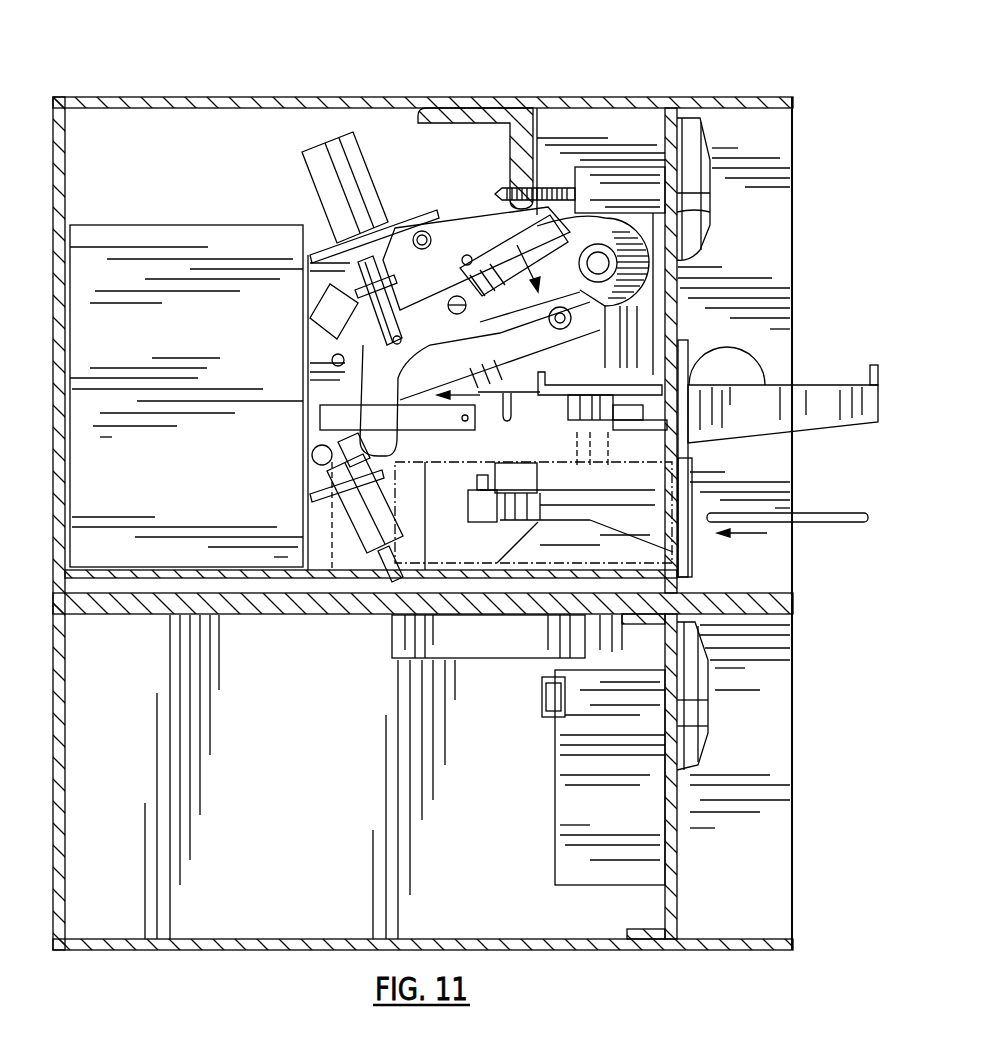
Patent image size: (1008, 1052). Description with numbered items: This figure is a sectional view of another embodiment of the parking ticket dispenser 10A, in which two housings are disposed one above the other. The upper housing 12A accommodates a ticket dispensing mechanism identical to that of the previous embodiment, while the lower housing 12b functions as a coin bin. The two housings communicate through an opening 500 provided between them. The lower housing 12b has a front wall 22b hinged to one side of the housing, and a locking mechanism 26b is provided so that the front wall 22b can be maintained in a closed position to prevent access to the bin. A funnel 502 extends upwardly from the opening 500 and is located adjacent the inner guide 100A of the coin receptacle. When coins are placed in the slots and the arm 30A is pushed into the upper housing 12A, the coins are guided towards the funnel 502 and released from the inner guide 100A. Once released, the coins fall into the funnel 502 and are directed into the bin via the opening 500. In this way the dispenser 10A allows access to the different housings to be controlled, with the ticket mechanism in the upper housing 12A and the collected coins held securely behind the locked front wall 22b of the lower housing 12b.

The parking ticket dispenser 10A is at (423, 499).
The housing 12A is at (284, 104).
The lower housing 12b is at (245, 948).
The front wall 22b is at (678, 897).
The locking mechanism 26b is at (596, 672).
The arm 30A is at (872, 370).
The inner guide 100A is at (585, 395).
The opening 500 is at (448, 615).
The funnel 502 is at (413, 572).